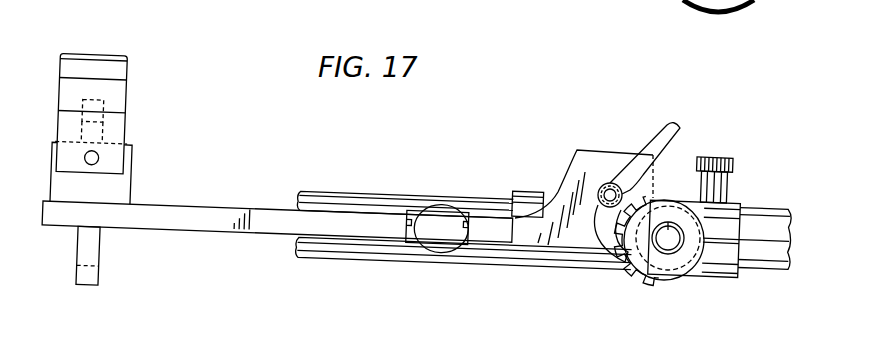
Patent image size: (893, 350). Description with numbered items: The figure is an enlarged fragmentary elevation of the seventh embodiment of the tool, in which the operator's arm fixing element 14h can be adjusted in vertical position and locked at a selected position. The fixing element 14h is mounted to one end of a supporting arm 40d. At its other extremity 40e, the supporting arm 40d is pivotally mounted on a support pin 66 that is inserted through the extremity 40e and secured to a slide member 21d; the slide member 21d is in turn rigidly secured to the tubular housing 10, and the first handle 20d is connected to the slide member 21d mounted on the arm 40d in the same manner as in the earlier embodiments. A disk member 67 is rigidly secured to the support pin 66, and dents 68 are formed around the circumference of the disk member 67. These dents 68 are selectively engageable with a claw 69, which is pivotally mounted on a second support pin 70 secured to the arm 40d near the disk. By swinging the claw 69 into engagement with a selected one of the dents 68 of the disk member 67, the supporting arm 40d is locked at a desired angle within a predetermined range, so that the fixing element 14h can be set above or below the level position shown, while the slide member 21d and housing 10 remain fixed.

The operator's arm fixing element 14h is at (128, 77).
The supporting arm 40d is at (196, 207).
The tubular housing 10 is at (393, 195).
The first handle 20d is at (447, 200).
The slide member 21d is at (470, 240).
The extremity of the arm 40e is at (707, 220).
The claw 69 is at (592, 232).
The support pin 70 is at (607, 185).
The dents 68 is at (643, 280).
The disk member 67 is at (655, 287).
The support pin 66 is at (672, 246).